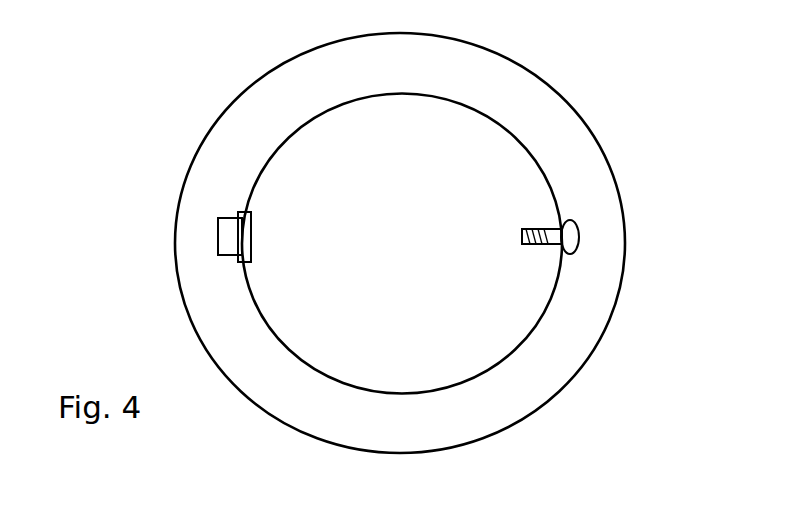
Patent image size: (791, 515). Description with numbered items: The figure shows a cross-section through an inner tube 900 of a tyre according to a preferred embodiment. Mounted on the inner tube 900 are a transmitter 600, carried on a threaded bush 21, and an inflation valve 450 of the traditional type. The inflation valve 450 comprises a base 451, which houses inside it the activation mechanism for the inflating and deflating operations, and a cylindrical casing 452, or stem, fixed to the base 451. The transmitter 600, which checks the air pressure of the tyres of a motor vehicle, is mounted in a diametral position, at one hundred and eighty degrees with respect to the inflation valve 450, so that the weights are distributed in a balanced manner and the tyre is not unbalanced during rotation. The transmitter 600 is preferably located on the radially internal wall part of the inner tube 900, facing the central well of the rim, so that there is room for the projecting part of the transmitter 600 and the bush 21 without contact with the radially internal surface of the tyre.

The inner tube 900 is at (524, 66).
The inflation valve 450 is at (594, 199).
The transmitter 600 is at (272, 260).
The threaded bush 21 is at (247, 205).
The base 451 is at (579, 243).
The cylindrical casing 452 is at (527, 228).